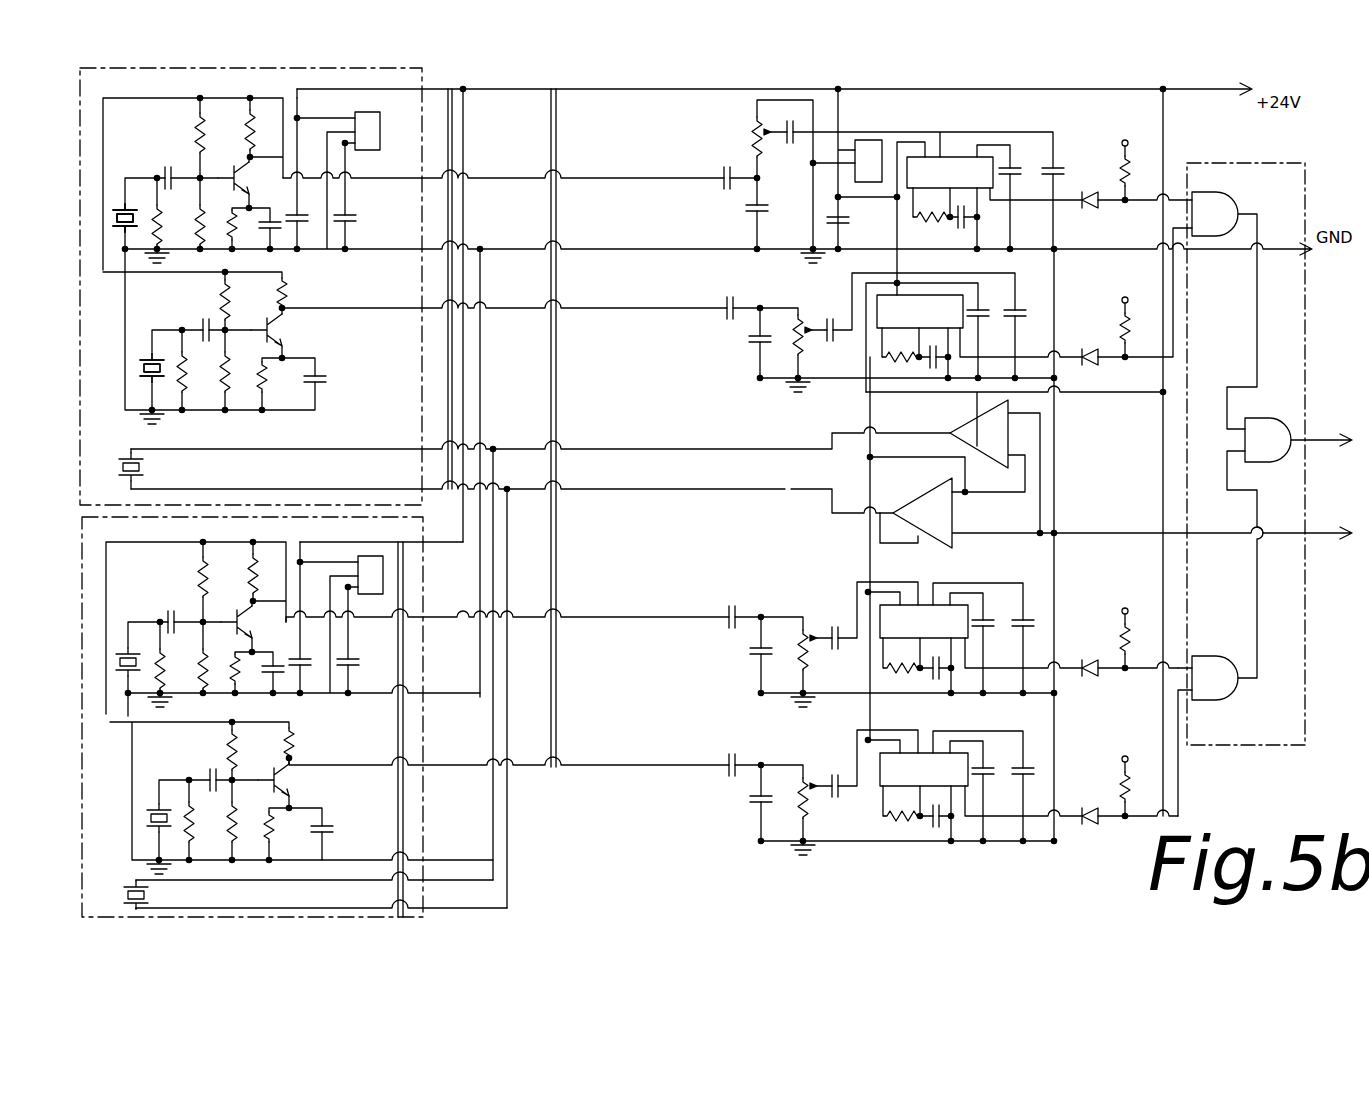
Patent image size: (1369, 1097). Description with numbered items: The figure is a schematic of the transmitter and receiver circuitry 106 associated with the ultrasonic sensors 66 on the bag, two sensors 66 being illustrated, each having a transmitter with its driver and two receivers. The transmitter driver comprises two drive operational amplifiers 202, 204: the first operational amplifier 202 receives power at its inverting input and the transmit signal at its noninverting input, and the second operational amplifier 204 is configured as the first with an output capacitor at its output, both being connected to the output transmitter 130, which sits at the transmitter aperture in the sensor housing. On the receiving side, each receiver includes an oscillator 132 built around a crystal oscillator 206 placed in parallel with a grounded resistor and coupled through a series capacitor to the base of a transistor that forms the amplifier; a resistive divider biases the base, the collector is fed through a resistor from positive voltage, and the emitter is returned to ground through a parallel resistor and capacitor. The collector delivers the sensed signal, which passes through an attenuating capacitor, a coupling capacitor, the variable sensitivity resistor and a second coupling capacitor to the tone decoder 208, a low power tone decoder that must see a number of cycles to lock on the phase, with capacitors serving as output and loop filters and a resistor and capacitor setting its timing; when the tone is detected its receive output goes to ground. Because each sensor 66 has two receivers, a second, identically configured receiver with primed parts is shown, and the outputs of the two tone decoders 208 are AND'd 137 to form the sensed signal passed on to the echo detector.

The sensor 66 is at (424, 75).
The oscillator circuit 106 is at (194, 98).
The transmitter 130 is at (147, 466).
The oscillator 132 is at (118, 206).
The AND 137 is at (1305, 352).
The first operational amplifier 202 is at (1003, 428).
The second operational amplifier 204 is at (935, 523).
The crystal oscillator 206 is at (115, 220).
The tone decoder 208 is at (953, 157).